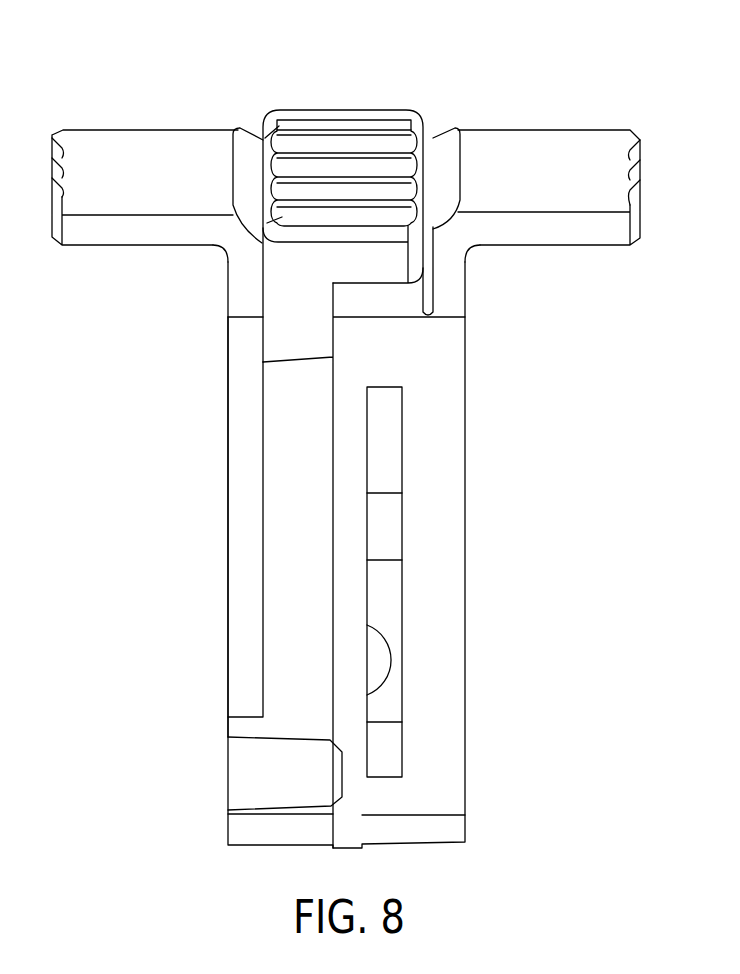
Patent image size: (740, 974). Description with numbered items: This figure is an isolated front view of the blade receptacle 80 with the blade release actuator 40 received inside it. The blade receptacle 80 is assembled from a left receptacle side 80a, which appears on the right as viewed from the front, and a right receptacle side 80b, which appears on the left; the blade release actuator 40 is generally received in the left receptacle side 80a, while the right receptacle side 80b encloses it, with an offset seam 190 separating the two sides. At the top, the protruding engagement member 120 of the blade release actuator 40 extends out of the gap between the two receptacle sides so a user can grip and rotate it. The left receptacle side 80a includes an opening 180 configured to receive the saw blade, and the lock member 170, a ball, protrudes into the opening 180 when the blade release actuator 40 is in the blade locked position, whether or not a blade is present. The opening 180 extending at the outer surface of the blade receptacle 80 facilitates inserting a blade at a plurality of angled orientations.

The blade release actuator 40 is at (301, 92).
The protruding engagement member 120 is at (352, 112).
The blade receptacle 80 is at (542, 389).
The left receptacle side 80a is at (287, 725).
The right receptacle side 80b is at (238, 555).
The lock member 170 is at (382, 660).
The opening 180 is at (394, 594).
The offset seam 190 is at (263, 460).